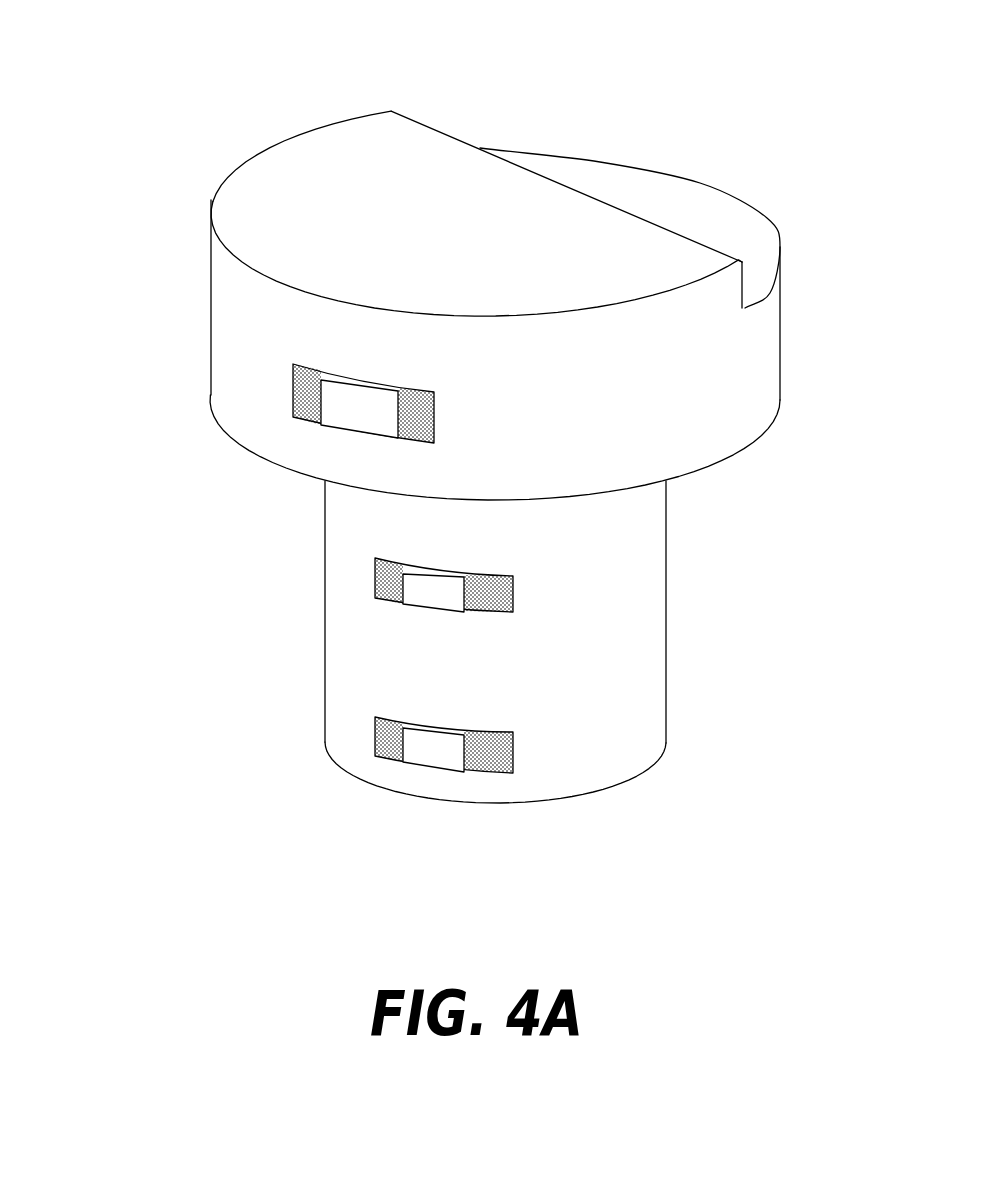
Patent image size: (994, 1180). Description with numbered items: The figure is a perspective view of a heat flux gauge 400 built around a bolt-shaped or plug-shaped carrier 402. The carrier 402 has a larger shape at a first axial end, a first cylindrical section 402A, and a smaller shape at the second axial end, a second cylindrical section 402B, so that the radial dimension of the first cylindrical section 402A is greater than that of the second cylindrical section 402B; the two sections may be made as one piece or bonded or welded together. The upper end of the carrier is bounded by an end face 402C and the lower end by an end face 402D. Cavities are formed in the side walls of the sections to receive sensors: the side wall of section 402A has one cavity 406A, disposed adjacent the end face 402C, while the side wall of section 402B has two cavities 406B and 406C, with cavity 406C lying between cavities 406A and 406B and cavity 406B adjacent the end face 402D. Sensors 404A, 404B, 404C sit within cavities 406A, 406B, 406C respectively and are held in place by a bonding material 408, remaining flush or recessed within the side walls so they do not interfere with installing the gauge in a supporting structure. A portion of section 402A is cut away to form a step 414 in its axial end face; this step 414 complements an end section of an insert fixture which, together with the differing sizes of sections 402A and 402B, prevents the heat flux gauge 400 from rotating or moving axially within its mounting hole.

The heat flux gauge 400 is at (131, 77).
The carrier 402 is at (222, 210).
The first cylindrical section 402A is at (773, 343).
The second cylindrical section 402B is at (655, 607).
The end face 402C is at (329, 136).
The end face 402D is at (547, 802).
The sensor 404A is at (337, 410).
The sensor 404B is at (418, 750).
The sensor 404C is at (427, 590).
The cavity 406A is at (434, 392).
The cavity 406B is at (480, 735).
The cavity 406C is at (480, 577).
The bonding material 408 is at (434, 422).
The step 414 is at (757, 230).